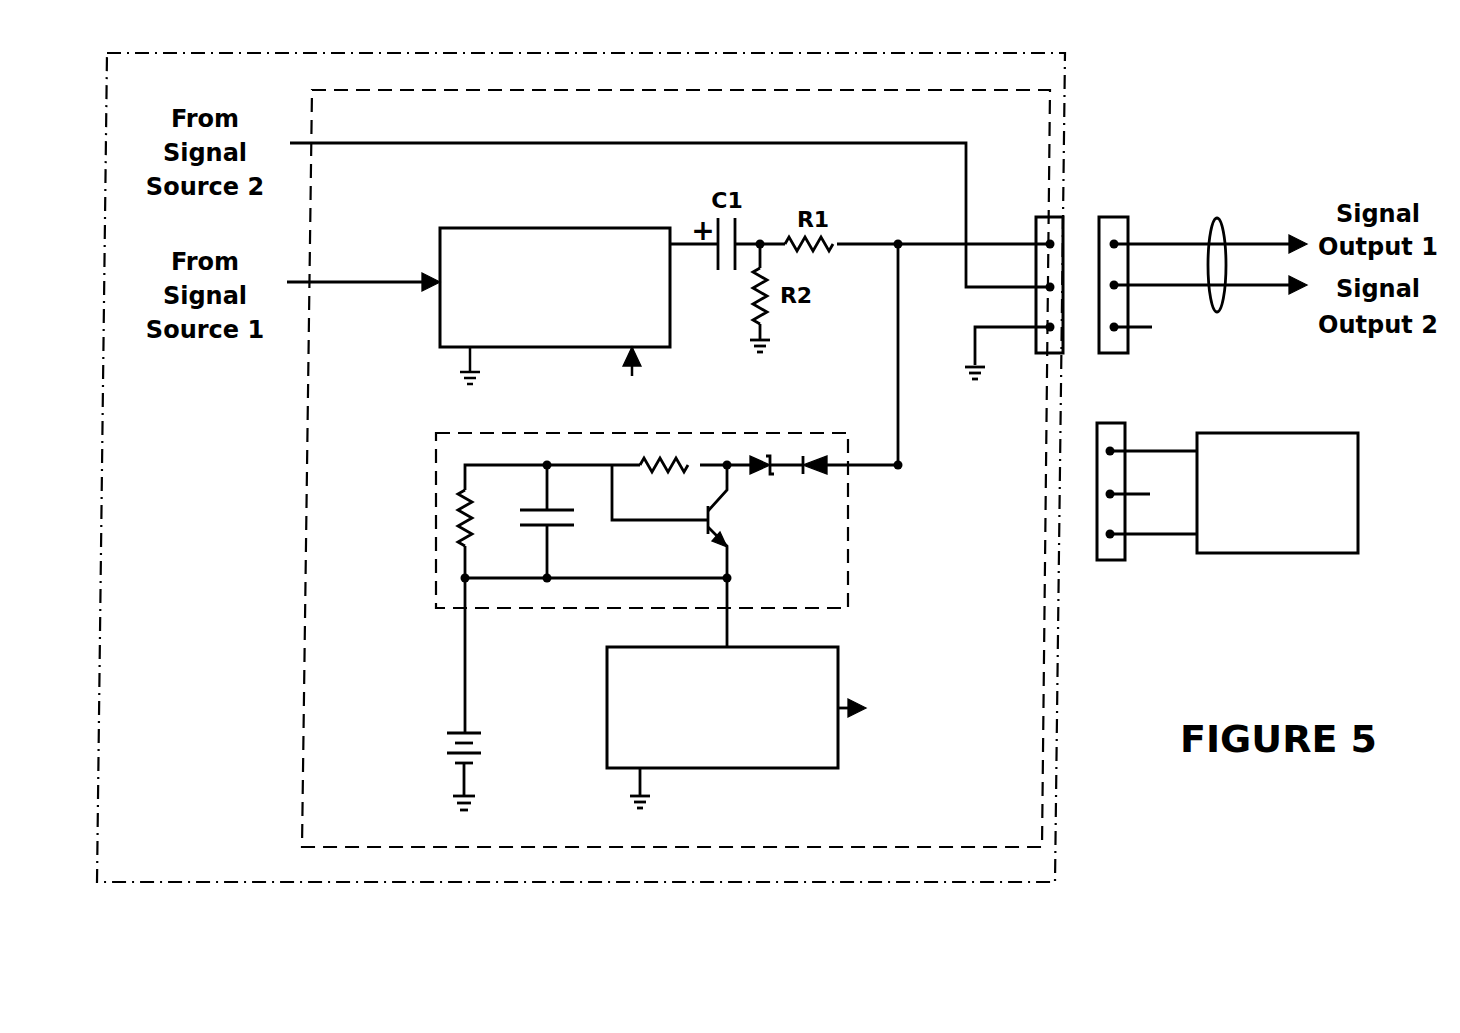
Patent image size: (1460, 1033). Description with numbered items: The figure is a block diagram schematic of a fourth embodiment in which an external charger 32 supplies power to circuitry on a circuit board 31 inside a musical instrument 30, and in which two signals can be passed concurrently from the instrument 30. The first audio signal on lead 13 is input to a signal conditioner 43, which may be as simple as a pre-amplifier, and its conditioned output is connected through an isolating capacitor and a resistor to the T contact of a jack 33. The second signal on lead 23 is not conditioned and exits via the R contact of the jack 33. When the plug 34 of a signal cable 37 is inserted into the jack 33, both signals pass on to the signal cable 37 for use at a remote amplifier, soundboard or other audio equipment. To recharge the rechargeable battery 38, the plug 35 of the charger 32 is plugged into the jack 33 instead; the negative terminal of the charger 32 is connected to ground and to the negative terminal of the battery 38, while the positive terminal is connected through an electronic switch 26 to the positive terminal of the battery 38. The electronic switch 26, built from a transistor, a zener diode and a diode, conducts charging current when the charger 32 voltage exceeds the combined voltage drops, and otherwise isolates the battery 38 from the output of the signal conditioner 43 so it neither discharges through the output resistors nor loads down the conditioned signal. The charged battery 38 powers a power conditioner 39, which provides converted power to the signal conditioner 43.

The lead 13 is at (335, 276).
The lead 23 is at (340, 135).
The signal conditioner 43 is at (554, 222).
The jack 33 is at (1042, 212).
The plug 34 is at (1117, 212).
The signal cable 37 is at (1216, 318).
The charger 32 is at (1258, 428).
The plug 35 is at (1105, 560).
The electronic switch 26 is at (822, 594).
The power conditioner 39 is at (838, 673).
The rechargeable battery 38 is at (478, 772).
The musical instrument 30 is at (158, 852).
The circuit board 31 is at (1020, 826).